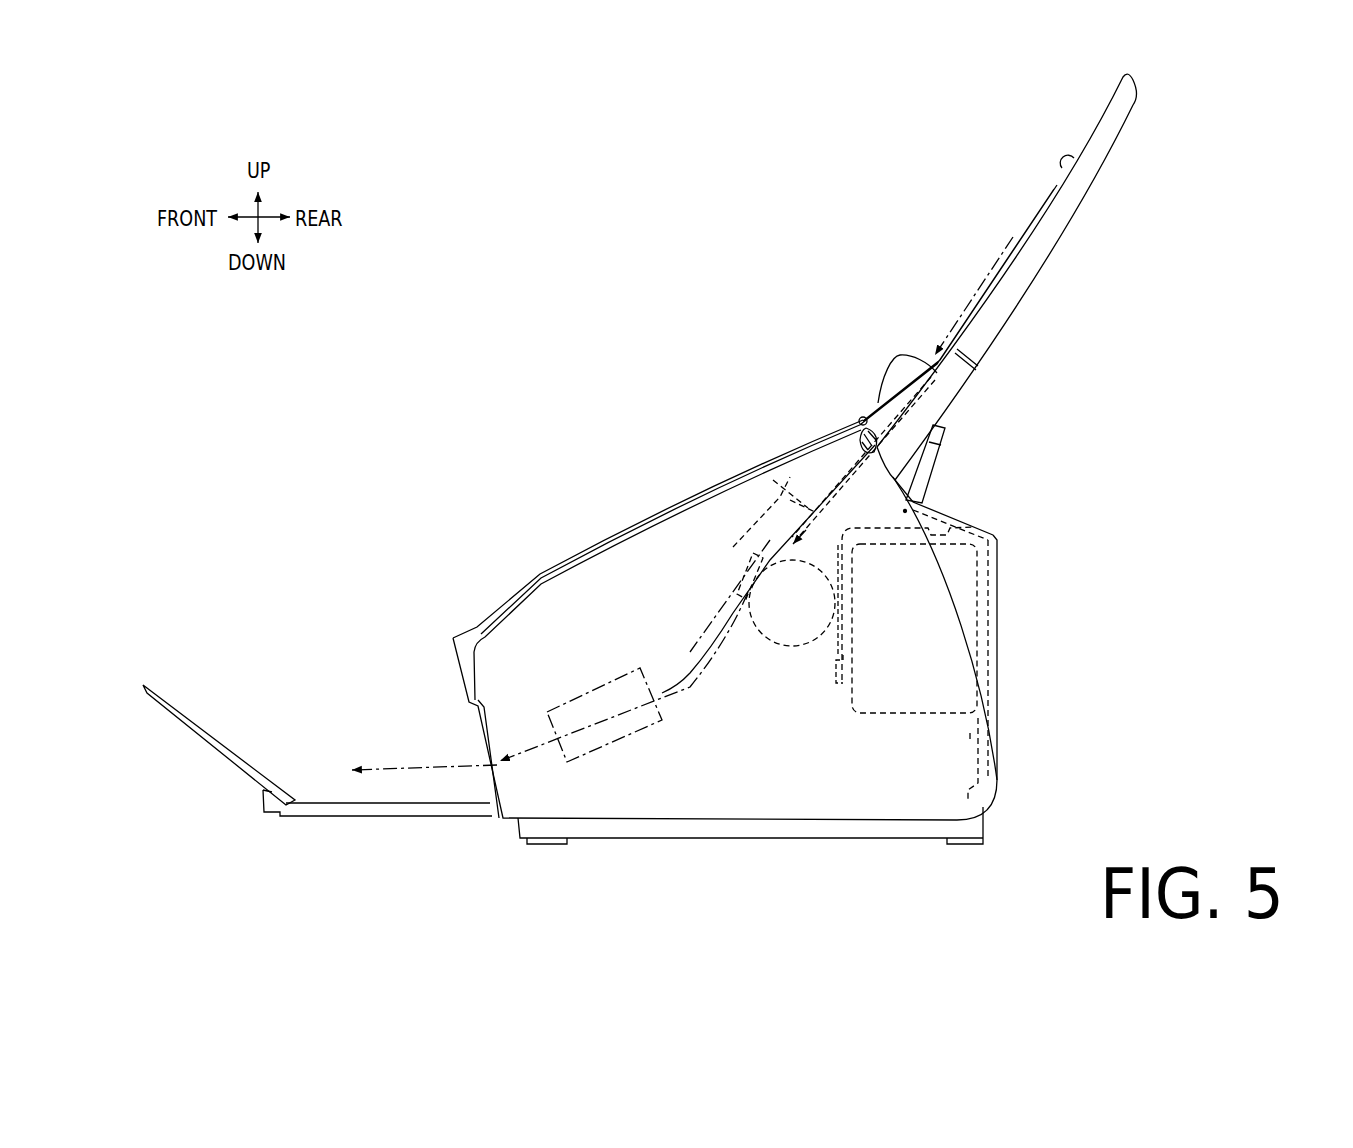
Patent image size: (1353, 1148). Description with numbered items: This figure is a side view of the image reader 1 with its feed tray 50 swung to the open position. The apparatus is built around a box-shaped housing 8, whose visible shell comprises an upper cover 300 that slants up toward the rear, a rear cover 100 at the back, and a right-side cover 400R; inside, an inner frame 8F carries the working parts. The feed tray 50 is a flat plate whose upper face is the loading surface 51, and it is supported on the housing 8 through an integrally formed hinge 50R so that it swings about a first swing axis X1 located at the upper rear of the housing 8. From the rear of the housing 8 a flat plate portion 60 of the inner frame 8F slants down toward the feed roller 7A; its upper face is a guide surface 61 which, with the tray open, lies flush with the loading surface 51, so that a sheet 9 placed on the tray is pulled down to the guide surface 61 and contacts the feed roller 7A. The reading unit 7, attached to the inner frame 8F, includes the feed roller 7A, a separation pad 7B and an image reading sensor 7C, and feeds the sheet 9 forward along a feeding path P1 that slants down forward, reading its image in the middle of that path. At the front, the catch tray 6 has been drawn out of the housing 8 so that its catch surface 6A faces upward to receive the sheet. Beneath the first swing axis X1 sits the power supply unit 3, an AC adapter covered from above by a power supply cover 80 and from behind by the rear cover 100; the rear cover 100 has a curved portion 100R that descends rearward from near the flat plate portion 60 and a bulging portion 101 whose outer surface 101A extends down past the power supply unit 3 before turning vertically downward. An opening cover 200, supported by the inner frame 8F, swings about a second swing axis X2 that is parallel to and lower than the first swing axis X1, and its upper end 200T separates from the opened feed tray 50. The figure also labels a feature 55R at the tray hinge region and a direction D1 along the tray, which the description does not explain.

The image reader 1 is at (606, 360).
The power supply unit 3 is at (921, 636).
The catch tray 6 is at (309, 823).
The catch surface 6A is at (236, 750).
The reading unit 7 is at (636, 619).
The feed roller 7A is at (806, 616).
The separation pad 7B is at (745, 577).
The image reading sensor 7C is at (588, 707).
The housing 8 is at (1003, 806).
The inner frame 8F is at (736, 655).
The sheet 9 is at (1040, 203).
The feed tray 50 is at (1072, 235).
The hinge 50R is at (883, 402).
The loading surface 51 is at (1057, 175).
The cover engaging portion 55R is at (908, 370).
The flat plate portion 60 is at (767, 510).
The guide surface 61 is at (790, 473).
The power supply cover 80 is at (832, 665).
The rear cover 100 is at (1001, 632).
The curved portion 100R is at (975, 658).
The bulging portion 101 is at (998, 593).
The outer surface 101A is at (1000, 557).
The opening cover 200 is at (926, 482).
The upper end 200T is at (946, 424).
The upper cover 300 is at (586, 547).
The right-side cover 400R is at (841, 808).
The document feed direction D1 is at (974, 296).
The feeding path P1 is at (524, 750).
The first swing axis X1 is at (858, 426).
The second swing axis X2 is at (903, 511).